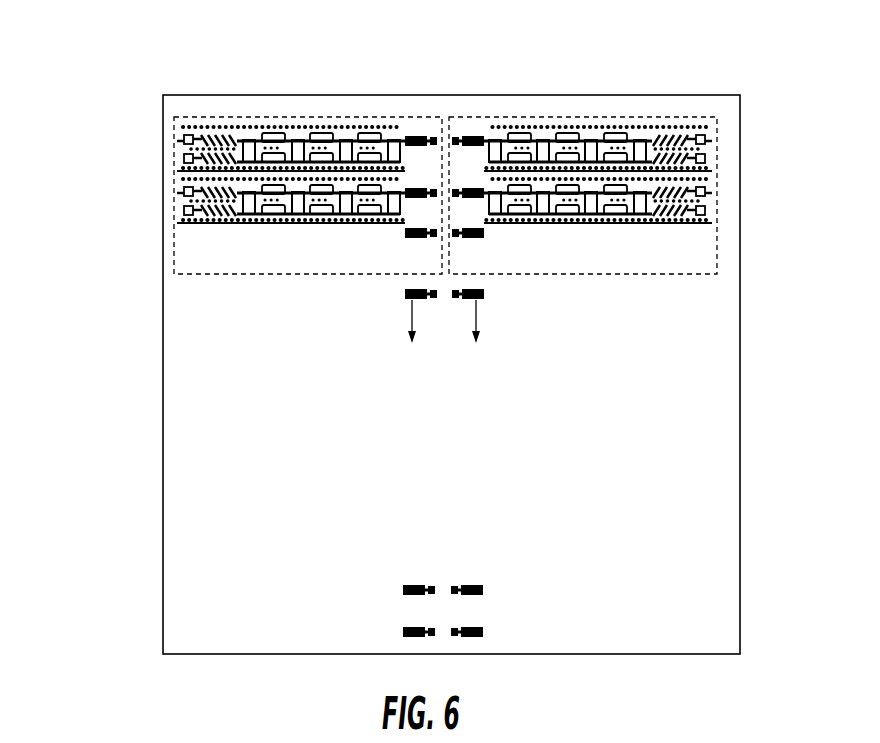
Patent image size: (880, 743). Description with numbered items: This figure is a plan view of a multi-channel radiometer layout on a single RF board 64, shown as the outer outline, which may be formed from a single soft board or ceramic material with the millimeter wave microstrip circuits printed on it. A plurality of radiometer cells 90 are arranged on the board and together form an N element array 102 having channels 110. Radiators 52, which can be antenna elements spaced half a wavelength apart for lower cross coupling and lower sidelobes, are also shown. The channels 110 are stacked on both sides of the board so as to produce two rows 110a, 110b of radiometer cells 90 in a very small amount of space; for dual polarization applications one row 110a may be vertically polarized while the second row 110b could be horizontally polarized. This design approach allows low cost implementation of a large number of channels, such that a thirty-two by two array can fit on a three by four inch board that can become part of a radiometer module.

The radiator 52 is at (405, 233).
The RF board 64 is at (510, 94).
The radiometer cell 90 is at (200, 240).
The N element array 102 is at (467, 425).
The channel 110 is at (459, 146).
The first row 110a is at (292, 118).
The second row 110b is at (641, 118).